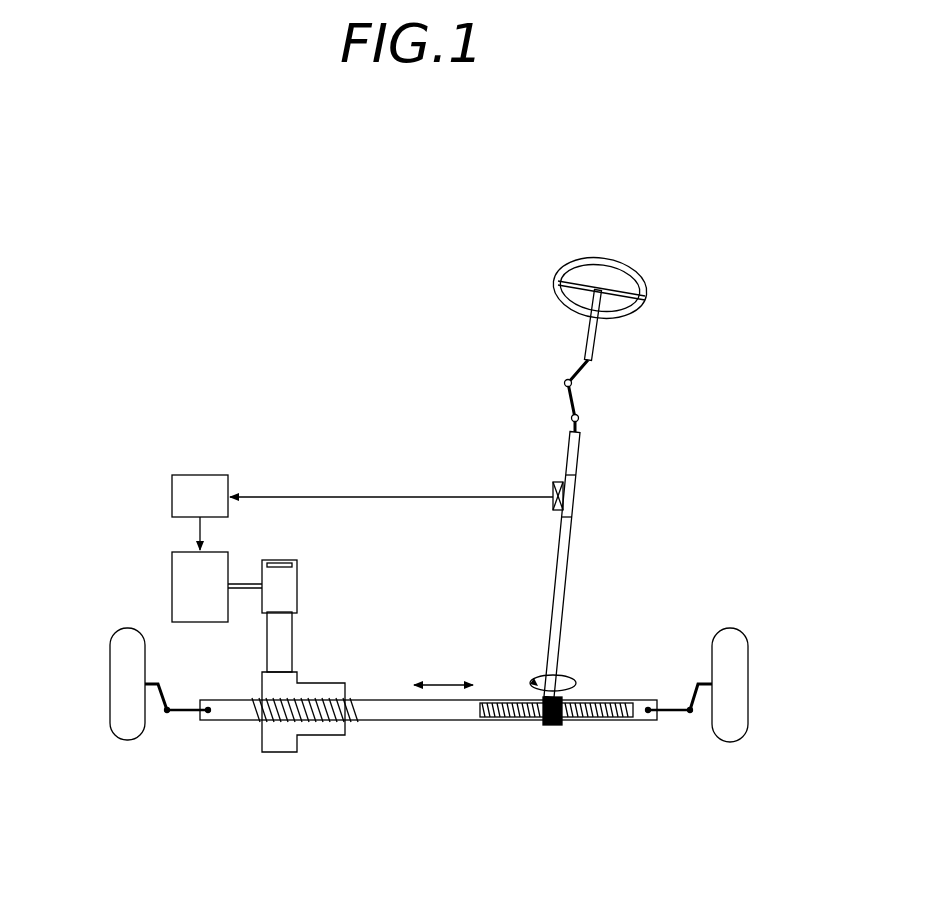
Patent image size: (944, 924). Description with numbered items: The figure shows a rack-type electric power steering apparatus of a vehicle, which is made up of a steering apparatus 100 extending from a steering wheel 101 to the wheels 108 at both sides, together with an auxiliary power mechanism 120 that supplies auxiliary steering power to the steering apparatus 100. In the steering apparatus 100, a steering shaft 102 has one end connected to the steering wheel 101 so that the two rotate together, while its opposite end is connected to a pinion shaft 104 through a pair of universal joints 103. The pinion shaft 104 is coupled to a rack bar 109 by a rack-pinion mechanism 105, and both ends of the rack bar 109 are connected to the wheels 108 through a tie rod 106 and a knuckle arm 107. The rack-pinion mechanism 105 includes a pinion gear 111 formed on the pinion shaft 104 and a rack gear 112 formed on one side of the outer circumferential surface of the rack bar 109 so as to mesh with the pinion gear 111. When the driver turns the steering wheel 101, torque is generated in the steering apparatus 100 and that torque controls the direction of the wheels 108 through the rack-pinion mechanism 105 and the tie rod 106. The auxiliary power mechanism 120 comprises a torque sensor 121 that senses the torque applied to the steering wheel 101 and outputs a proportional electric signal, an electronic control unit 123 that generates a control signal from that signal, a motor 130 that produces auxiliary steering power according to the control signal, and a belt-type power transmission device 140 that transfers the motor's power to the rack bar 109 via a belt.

The steering apparatus 100 is at (184, 210).
The steering wheel 101 is at (557, 284).
The steering shaft 102 is at (595, 332).
The universal joints 103 is at (579, 420).
The pinion shaft 104 is at (570, 550).
The rack-pinion mechanism 105 is at (556, 762).
The tie rod 106 is at (670, 716).
The knuckle arm 107 is at (693, 698).
The wheels 108 is at (118, 718).
The rack bar 109 is at (445, 712).
The pinion gear 111 is at (555, 727).
The rack gear 112 is at (597, 712).
The auxiliary power mechanism 120 is at (376, 450).
The torque sensor 121 is at (556, 483).
The electronic control unit (ECU) 123 is at (172, 497).
The motor 130 is at (172, 588).
The belt-type power transmission device 140 is at (309, 649).